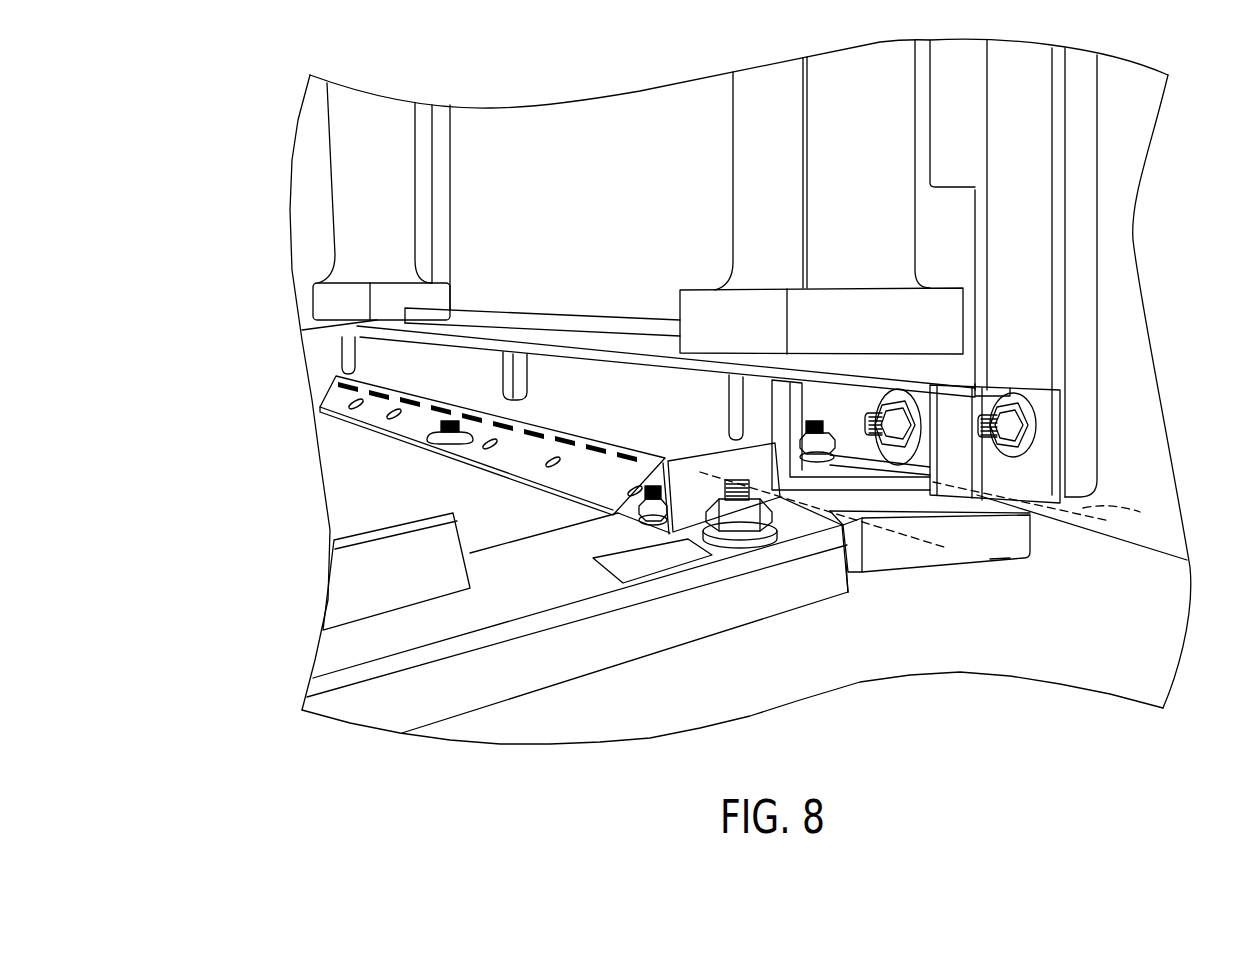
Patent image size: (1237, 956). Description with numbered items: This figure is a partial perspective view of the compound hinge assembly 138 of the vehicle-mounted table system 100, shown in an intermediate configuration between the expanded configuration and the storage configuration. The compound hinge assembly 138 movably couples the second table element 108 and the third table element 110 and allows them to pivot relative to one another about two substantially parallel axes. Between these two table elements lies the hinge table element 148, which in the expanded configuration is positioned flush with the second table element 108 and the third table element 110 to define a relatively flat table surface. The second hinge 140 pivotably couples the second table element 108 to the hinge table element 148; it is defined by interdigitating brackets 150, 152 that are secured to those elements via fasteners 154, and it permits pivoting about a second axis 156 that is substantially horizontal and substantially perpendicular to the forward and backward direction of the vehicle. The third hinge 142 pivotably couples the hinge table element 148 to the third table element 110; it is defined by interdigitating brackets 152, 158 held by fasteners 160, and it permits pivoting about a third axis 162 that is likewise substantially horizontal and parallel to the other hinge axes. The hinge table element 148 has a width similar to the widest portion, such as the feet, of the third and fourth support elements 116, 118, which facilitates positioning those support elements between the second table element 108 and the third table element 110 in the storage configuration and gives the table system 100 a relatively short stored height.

The table system 100 is at (283, 479).
The second table element 108 is at (660, 652).
The third table element 110 is at (1100, 297).
The third support element 116 is at (733, 182).
The fourth support element 118 is at (417, 178).
The compound hinge assembly 138 is at (997, 600).
The second hinge 140 is at (852, 606).
The third hinge 142 is at (1072, 557).
The hinge table element 148 is at (945, 570).
The bracket 150 is at (483, 470).
The bracket 152 is at (572, 348).
The fasteners 154 is at (425, 438).
The second axis 156 is at (913, 540).
The bracket 158 is at (1063, 460).
The fasteners 160 is at (1037, 410).
The third axis 162 is at (1140, 512).